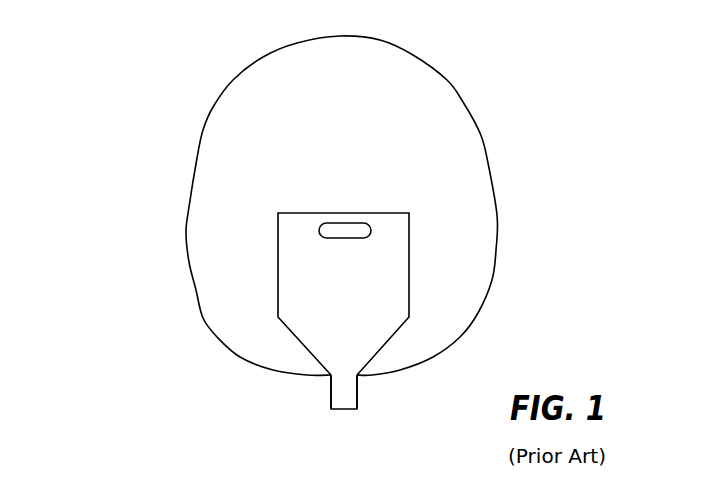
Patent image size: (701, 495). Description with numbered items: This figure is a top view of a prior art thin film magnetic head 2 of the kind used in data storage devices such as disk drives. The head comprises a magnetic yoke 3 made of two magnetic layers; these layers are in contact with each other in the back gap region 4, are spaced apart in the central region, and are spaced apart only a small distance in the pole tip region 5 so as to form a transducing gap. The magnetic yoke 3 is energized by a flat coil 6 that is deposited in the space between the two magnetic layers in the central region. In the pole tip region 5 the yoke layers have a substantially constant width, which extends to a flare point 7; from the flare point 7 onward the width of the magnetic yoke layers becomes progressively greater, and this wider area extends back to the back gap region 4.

The thin film magnetic head 2 is at (168, 199).
The magnetic yoke 3 is at (400, 276).
The back gap region 4 is at (362, 224).
The pole tip region 5 is at (331, 395).
The flat coil 6 is at (201, 251).
The flare point 7 is at (358, 377).